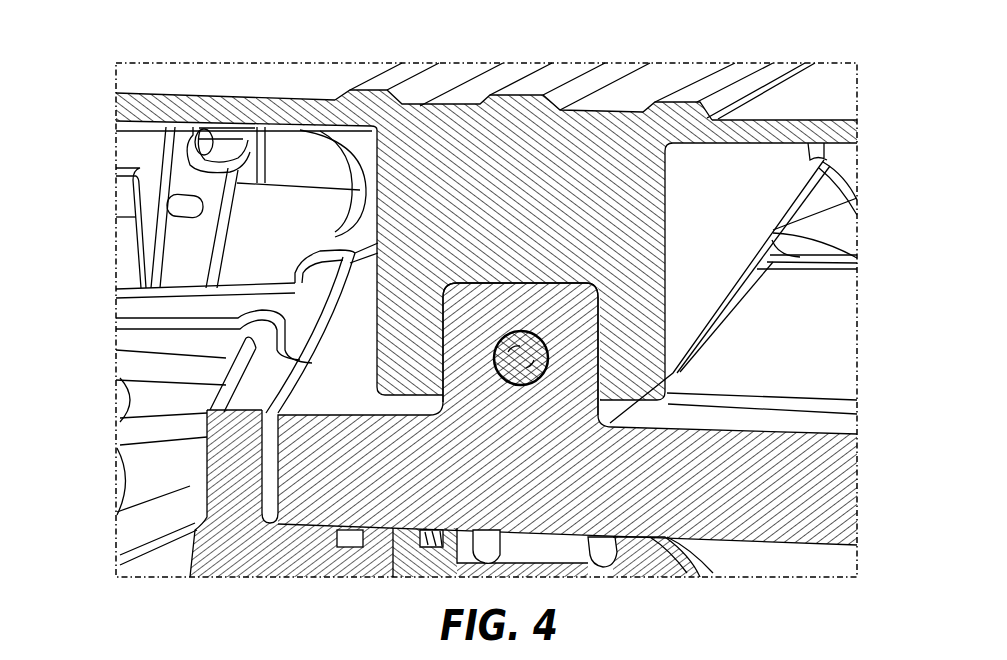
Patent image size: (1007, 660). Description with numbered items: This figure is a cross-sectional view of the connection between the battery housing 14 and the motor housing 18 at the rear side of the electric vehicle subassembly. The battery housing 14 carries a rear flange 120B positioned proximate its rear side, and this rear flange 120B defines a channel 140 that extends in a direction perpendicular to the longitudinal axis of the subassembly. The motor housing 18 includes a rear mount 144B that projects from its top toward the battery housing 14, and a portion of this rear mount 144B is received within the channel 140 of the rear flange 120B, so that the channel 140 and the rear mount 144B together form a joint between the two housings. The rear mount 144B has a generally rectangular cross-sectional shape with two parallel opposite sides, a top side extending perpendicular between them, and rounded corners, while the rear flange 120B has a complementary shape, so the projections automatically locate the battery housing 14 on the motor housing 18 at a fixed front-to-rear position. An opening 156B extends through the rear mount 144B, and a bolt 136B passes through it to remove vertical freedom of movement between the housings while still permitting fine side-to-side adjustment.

The battery housing 14 is at (800, 120).
The motor housing 18 is at (323, 462).
The rear flange 120B is at (385, 224).
The bolt 136B is at (440, 381).
The channel 140 is at (497, 302).
The rear mount 144B is at (572, 316).
The opening 156B is at (443, 378).